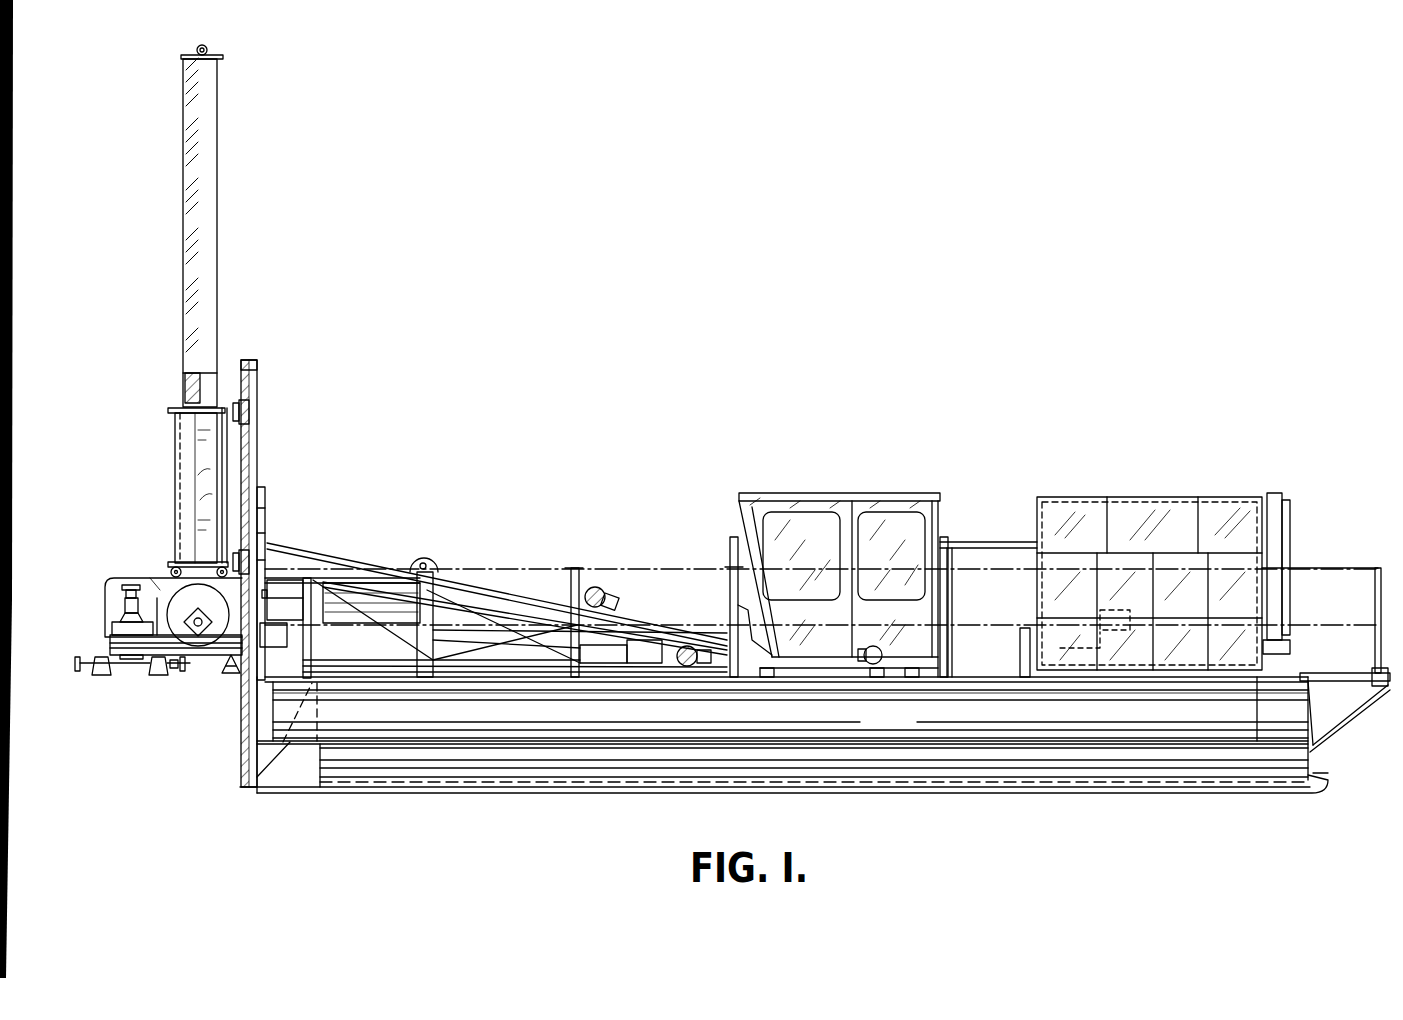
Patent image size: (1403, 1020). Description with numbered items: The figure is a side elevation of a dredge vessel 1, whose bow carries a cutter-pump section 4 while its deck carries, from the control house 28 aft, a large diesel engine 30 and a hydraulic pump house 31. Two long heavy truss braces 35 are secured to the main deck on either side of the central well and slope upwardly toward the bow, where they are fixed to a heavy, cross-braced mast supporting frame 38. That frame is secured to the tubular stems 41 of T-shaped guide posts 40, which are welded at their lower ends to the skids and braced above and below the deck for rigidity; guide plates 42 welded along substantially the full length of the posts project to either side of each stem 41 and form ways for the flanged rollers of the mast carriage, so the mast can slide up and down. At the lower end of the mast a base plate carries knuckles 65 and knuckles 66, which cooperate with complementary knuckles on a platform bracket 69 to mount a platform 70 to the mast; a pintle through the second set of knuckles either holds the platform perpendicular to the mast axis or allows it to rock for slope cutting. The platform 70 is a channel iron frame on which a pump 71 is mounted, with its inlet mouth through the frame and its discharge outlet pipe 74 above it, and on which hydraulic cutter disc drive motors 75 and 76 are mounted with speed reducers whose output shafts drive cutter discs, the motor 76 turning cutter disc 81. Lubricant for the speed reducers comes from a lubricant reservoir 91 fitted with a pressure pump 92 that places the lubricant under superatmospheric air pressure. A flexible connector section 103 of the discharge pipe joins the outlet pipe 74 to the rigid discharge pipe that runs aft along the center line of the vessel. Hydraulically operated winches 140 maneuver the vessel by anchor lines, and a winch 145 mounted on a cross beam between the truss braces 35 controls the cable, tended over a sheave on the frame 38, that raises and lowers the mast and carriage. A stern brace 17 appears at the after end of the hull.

The dredge vessel 1 is at (852, 482).
The cutter-pump section 4 is at (357, 467).
The stern brace 17 is at (1343, 725).
The control house 28 is at (822, 462).
The diesel engine 30 is at (1208, 462).
The hydraulic pump house 31 is at (985, 540).
The truss braces 35 is at (510, 593).
The mast supporting frame 38 is at (260, 497).
The guide posts 40 is at (252, 382).
The tubular stems 41 is at (228, 458).
The guide plates 42 is at (243, 360).
The knuckles 65 is at (170, 570).
The knuckles 66 is at (210, 557).
The platform bracket 69 is at (115, 578).
The platform 70 is at (202, 655).
The pump 71 is at (196, 606).
The discharge outlet pipe 74 is at (288, 585).
The hydraulic cutter disc drive motor 75 is at (120, 602).
The hydraulic cutter disc drive motor 76 is at (284, 613).
The cutter disc 81 is at (232, 672).
The lubricant reservoir 91 is at (1060, 648).
The pressure pump 92 is at (1100, 610).
The flexible connector section 103 is at (552, 650).
The winches 140 is at (688, 668).
The winch 145 is at (620, 598).